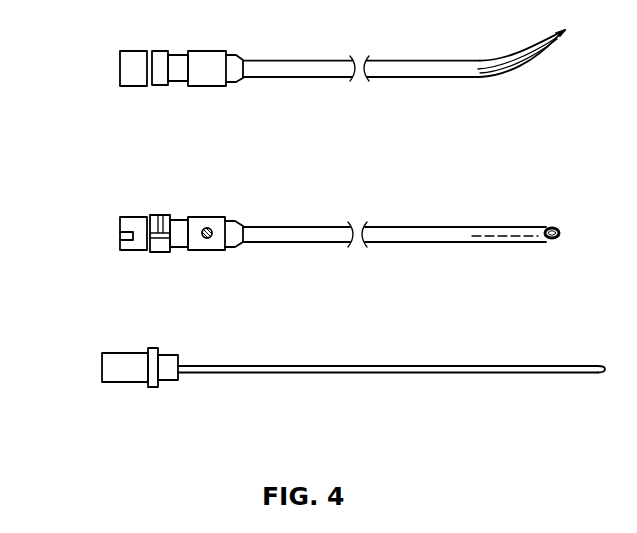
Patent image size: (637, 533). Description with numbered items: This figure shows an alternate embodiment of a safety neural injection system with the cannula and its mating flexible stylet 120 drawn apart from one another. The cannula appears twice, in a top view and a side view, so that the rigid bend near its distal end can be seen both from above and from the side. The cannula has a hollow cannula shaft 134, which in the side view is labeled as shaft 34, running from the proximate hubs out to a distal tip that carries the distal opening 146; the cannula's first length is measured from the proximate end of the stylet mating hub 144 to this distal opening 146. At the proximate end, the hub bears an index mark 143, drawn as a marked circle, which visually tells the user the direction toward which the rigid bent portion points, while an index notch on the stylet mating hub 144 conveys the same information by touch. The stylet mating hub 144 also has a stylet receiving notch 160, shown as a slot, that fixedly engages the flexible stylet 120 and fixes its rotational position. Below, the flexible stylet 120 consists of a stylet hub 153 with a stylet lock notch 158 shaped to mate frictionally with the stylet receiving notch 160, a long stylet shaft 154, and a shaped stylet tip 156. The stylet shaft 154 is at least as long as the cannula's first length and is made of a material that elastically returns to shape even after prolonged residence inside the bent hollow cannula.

The stylet mating hub 144 is at (138, 50).
The hollow cannula shaft 134 is at (326, 60).
The stylet receiving notch 160 is at (130, 252).
The index mark 143 is at (210, 238).
The straight tube / cannula 34 is at (302, 224).
The distal opening 146 is at (557, 240).
The flexible stylet 120 is at (90, 359).
The stylet handle 153 is at (133, 353).
The stylet hub 158 is at (165, 353).
The stylet shaft 154 is at (368, 364).
The shaped stylet tip 156 is at (605, 374).